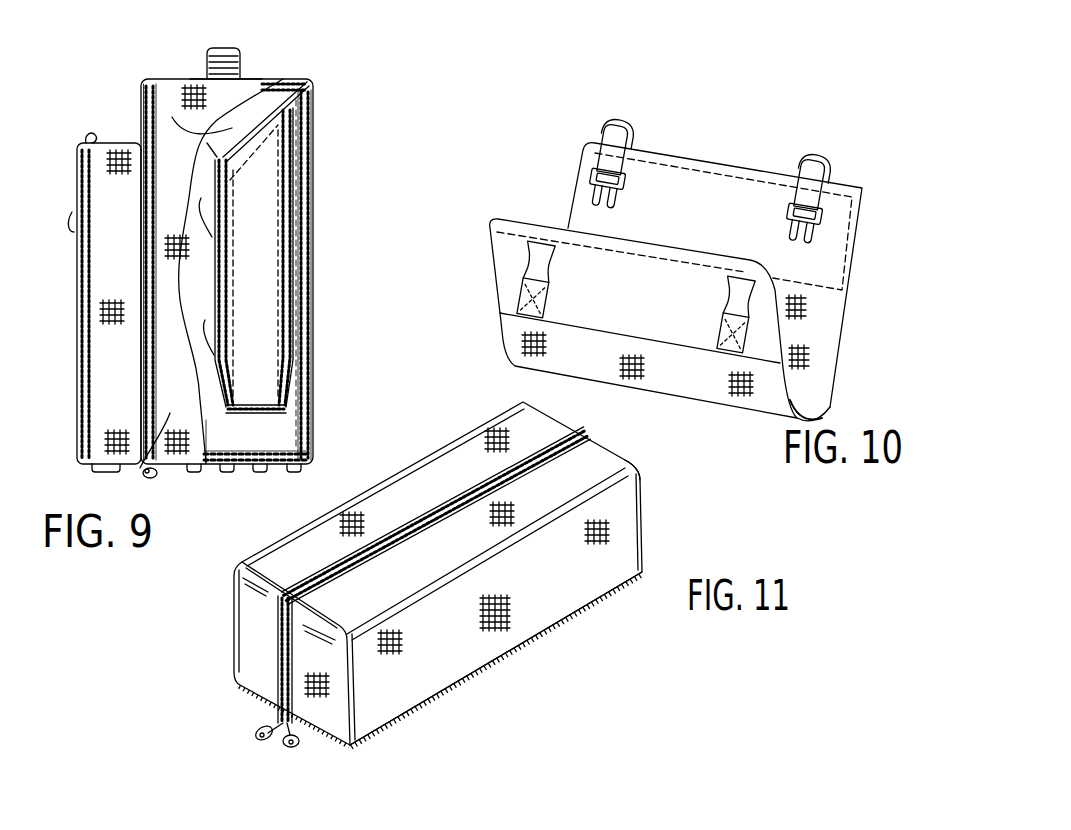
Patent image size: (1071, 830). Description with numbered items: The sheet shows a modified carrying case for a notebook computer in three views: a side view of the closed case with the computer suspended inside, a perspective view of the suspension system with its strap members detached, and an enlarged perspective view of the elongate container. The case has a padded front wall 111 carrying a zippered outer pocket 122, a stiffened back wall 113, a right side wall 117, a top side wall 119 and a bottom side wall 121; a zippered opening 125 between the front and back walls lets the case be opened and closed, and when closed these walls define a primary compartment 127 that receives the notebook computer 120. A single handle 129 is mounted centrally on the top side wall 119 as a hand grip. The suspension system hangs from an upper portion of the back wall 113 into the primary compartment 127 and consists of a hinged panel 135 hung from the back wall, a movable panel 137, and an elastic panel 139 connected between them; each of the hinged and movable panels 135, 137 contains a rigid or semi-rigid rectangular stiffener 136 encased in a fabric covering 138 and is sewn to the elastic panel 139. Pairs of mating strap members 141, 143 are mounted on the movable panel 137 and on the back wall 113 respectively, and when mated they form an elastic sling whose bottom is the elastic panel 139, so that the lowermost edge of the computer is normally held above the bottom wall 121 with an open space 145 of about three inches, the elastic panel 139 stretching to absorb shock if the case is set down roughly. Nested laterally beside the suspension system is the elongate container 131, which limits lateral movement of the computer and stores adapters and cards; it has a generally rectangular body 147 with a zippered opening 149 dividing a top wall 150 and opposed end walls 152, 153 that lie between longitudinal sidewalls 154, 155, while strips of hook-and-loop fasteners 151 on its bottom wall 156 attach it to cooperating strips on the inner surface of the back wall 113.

In FIG. 9, the front wall 111 is at (142, 103).
In FIG. 9, the back wall 113 is at (315, 128).
In FIG. 9, the right side wall 117 is at (140, 468).
In FIG. 9, the top side wall 119 is at (203, 78).
In FIG. 9, the notebook computer 120 is at (273, 167).
In FIG. 9, the bottom side wall 121 is at (212, 460).
In FIG. 9, the zippered outer pocket 122 is at (76, 170).
In FIG. 9, the zippered opening 125 is at (143, 78).
In FIG. 9, the primary compartment 127 is at (172, 117).
In FIG. 9, the handle 129 is at (240, 52).
In FIG. 11, the elongate container 131 is at (672, 532).
In FIG. 9, the hinged panel 135 is at (297, 223).
In FIG. 10, the hinged panel 135 is at (850, 233).
In FIG. 9, the rectangular stiffener 136 is at (285, 298).
In FIG. 9, the movable panel 137 is at (245, 277).
In FIG. 10, the movable panel 137 is at (778, 333).
In FIG. 9, the fabric covering 138 is at (285, 330).
In FIG. 9, the elastic panel 139 is at (283, 385).
In FIG. 10, the elastic panel 139 is at (826, 401).
In FIG. 10, the strap member 141 is at (520, 288).
In FIG. 9, the strap member 143 is at (313, 108).
In FIG. 10, the strap member 143 is at (595, 133).
In FIG. 9, the open space 145 is at (263, 428).
In FIG. 11, the rectangular body 147 is at (533, 640).
In FIG. 11, the zippered opening 149 is at (277, 657).
In FIG. 11, the top wall 150 is at (307, 553).
In FIG. 11, the hook-and-loop fasteners 151 is at (432, 700).
In FIG. 11, the end wall 152 is at (240, 690).
In FIG. 11, the end wall 153 is at (645, 490).
In FIG. 11, the longitudinal sidewall 154 is at (233, 586).
In FIG. 11, the longitudinal sidewall 155 is at (583, 583).
In FIG. 11, the bottom wall 156 is at (383, 733).